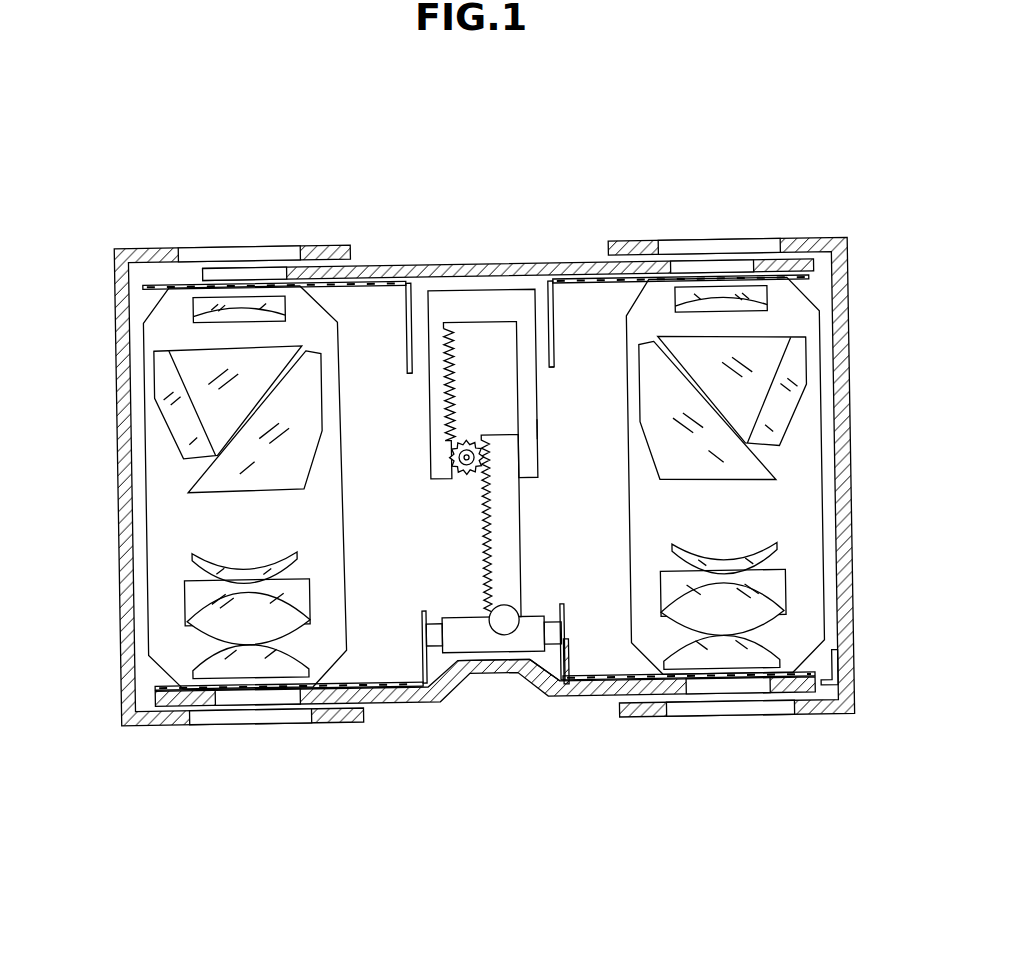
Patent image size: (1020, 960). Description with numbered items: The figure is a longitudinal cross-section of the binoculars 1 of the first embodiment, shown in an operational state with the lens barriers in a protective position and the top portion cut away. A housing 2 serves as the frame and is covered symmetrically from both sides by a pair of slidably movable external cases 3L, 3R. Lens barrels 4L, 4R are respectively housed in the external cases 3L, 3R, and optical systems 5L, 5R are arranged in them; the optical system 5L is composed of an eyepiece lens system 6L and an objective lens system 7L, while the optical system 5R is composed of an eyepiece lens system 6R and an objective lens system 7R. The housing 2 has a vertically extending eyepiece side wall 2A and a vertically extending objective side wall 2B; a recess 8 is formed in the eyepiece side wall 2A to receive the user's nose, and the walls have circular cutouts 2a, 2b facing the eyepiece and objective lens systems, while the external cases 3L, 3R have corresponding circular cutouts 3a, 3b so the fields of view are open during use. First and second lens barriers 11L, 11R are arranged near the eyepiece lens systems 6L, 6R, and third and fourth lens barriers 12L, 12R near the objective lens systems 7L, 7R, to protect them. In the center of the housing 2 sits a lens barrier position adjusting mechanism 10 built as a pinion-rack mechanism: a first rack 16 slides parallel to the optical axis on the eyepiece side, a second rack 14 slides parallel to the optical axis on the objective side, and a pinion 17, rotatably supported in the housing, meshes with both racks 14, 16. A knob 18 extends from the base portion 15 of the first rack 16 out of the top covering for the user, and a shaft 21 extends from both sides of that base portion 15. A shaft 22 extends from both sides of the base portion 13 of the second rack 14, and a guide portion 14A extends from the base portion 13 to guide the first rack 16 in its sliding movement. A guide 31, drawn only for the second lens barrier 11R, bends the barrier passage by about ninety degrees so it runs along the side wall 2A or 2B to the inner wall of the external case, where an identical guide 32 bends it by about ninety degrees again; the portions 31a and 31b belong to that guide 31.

The binoculars 1 is at (462, 757).
The housing 2 is at (481, 494).
The eyepiece side wall 2A is at (585, 697).
The objective side wall 2B is at (365, 330).
The circular cutout 2a is at (284, 701).
The circular cutout 2b is at (224, 264).
The external case 3L is at (118, 388).
The external case 3R is at (851, 383).
The circular cutout 3a is at (240, 720).
The circular cutout 3b is at (276, 243).
The lens barrel 4L is at (146, 462).
The lens barrel 4R is at (822, 450).
The optical system 5L is at (186, 516).
The optical system 5R is at (786, 504).
The eyepiece lens system 6L is at (186, 644).
The eyepiece lens system 6R is at (797, 622).
The objective lens system 7L is at (172, 308).
The objective lens system 7R is at (785, 302).
The recess 8 is at (484, 705).
The lens barrier position adjusting mechanism 10 is at (548, 497).
The first lens barrier 11L is at (419, 672).
The second lens barrier 11R is at (563, 680).
The third lens barrier 12L is at (407, 310).
The fourth lens barrier 12R is at (582, 282).
The base portion 13 is at (489, 290).
The second rack 14 is at (440, 432).
The guide portion 14A is at (539, 431).
The base portion 15 is at (468, 653).
The first rack 16 is at (512, 522).
The pinion 17 is at (462, 474).
The knob 18 is at (512, 604).
The shaft 21 is at (432, 623).
The shaft 22 is at (413, 375).
The guide 31 is at (560, 700).
The inclined portion 31a is at (530, 688).
The vertical portion 31b is at (568, 645).
The guide 32 is at (838, 660).